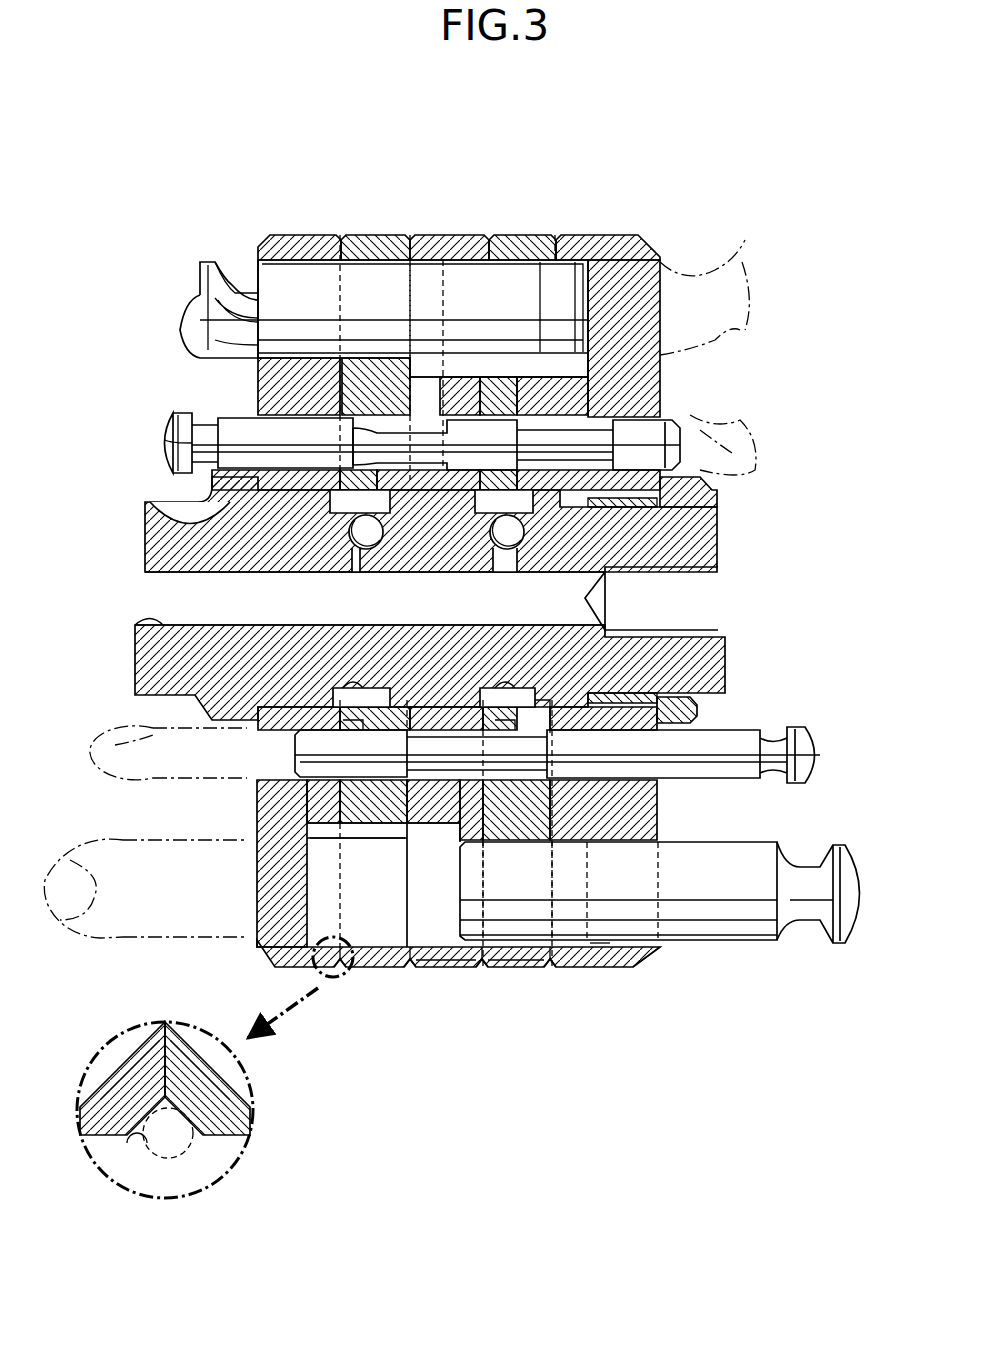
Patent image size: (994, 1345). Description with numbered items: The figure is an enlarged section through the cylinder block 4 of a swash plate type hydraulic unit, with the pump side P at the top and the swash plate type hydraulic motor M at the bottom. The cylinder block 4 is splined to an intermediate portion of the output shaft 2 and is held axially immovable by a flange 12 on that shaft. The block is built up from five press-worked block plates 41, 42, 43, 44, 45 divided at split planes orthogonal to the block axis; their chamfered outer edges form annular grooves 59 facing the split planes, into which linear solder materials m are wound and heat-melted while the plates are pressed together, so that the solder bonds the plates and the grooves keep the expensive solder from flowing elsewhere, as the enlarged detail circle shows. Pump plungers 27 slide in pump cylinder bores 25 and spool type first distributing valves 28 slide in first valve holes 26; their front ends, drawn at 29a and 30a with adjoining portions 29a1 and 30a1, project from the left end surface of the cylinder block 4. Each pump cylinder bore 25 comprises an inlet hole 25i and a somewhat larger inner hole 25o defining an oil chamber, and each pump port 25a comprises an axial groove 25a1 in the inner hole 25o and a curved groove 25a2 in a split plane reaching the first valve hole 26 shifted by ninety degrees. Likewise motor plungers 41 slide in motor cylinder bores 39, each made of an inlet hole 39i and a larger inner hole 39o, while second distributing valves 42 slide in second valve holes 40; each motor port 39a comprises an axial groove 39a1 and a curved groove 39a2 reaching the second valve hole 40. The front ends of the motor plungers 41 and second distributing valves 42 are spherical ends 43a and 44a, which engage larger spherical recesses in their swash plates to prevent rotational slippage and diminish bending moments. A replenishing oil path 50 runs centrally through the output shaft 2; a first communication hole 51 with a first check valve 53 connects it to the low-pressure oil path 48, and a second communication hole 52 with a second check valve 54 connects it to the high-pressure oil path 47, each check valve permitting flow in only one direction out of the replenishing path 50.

The primary clamping mechanism P is at (177, 248).
The swash plate type hydraulic motor M is at (757, 963).
The solder material m is at (210, 1190).
The output shaft 2 is at (703, 537).
The cylinder block 4 is at (265, 953).
The flange 12 is at (145, 522).
The pump cylinder bore 25 is at (325, 348).
The inlet hole 25i is at (300, 258).
The inner hole 25o is at (507, 262).
The pump port 25a is at (423, 395).
The axial groove 25a1 is at (497, 362).
The curved groove 25a2 is at (422, 335).
The first valve hole 26 is at (263, 433).
The pump plunger 27 is at (374, 322).
The first distributing valve 28 is at (647, 437).
The head 29a is at (190, 298).
The neck portion 29a1 is at (233, 293).
The head of rod 30a is at (160, 452).
The neck of rod 30a1 is at (207, 433).
The motor cylinder bore 39 is at (650, 848).
The motor port 39a is at (465, 815).
The axial groove 39a1 is at (373, 838).
The curved groove 39a2 is at (487, 843).
The inner hole 39o is at (372, 958).
The inlet hole 39i is at (597, 963).
The second valve hole 40 is at (573, 770).
The motor plunger 41 is at (742, 262).
The second distributing valve 42 is at (745, 420).
The third block plate 43 is at (448, 967).
The spherical end 43a is at (840, 950).
The fourth block plate 44 is at (523, 965).
The spherical end 44a is at (815, 738).
The fifth block plate 45 is at (630, 962).
The high-pressure oil path 47 is at (343, 688).
The low-pressure oil path 48 is at (477, 690).
The replenishing oil path 50 is at (150, 617).
The first communication hole 51 is at (497, 562).
The second communication hole 52 is at (355, 560).
The first check valve 53 is at (515, 540).
The second check valve 54 is at (377, 545).
The annular groove 59 is at (340, 968).